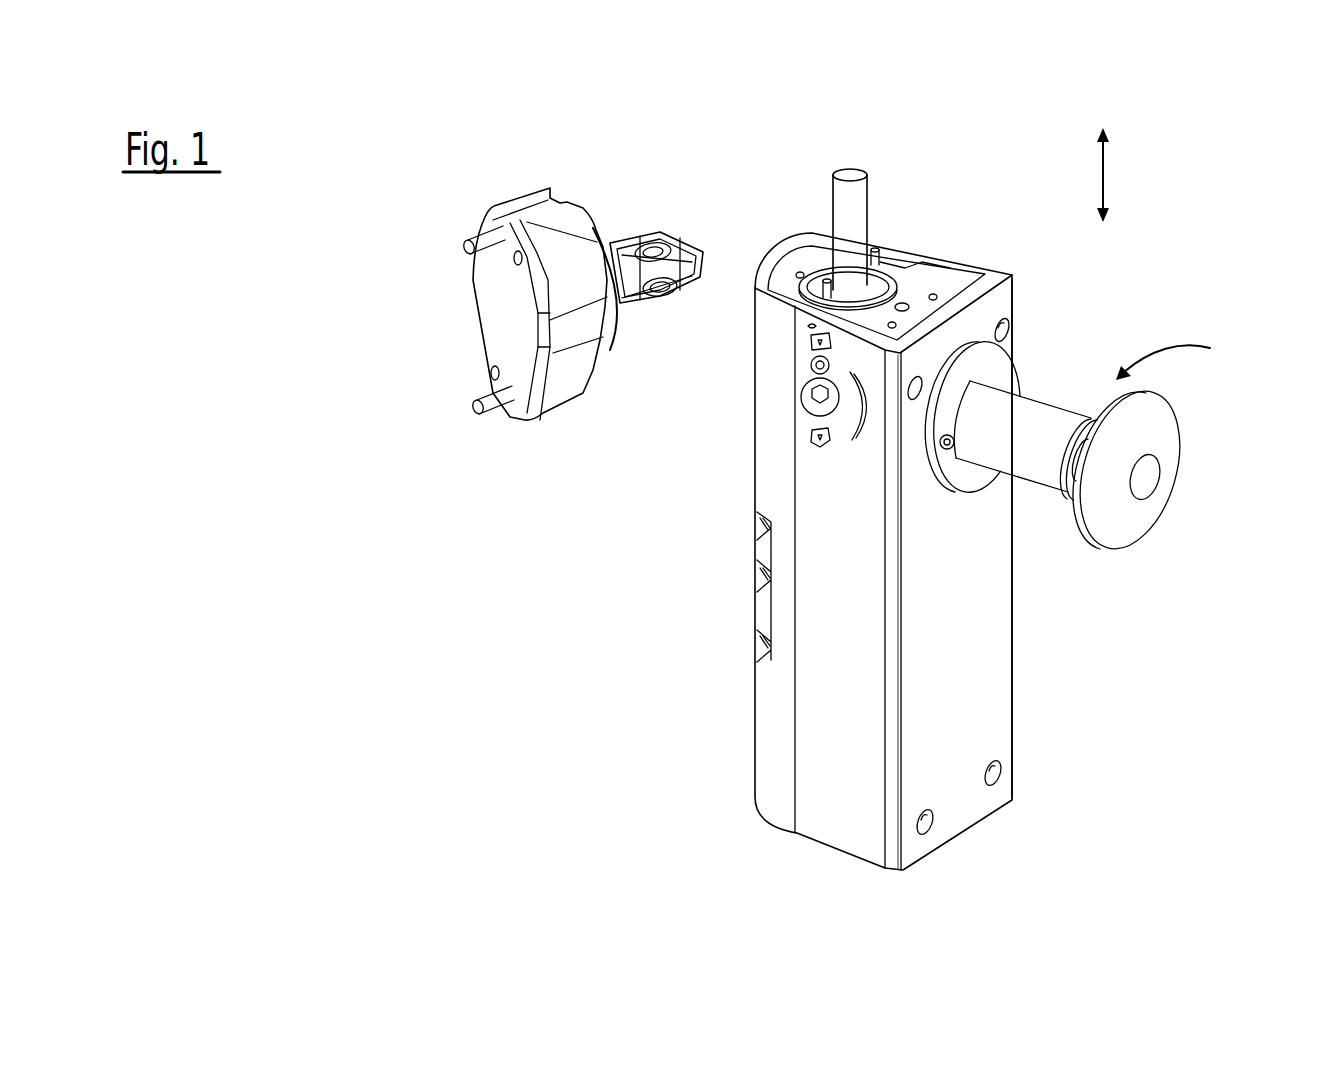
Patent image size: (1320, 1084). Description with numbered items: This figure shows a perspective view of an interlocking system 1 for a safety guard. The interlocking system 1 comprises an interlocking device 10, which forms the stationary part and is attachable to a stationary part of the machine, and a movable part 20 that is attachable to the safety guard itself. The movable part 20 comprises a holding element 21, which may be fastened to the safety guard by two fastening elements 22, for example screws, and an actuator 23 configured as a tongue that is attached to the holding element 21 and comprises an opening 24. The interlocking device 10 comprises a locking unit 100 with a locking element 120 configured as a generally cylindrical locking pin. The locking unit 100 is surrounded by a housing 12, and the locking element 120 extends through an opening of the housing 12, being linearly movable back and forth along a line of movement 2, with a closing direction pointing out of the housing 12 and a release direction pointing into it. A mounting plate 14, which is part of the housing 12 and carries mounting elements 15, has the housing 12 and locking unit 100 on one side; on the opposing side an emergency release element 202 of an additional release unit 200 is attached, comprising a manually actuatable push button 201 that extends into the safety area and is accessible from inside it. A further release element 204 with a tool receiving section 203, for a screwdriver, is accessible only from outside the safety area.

The interlocking system 1 is at (803, 495).
The line of movement 2 is at (1113, 175).
The interlocking device 10 is at (966, 507).
The housing 12 is at (876, 551).
The mounting plate 14 is at (1070, 539).
The mounting elements 15 is at (1003, 597).
The movable part 20 is at (545, 303).
The holding element 21 is at (545, 339).
The fastening elements 22 is at (459, 319).
The actuator 23 is at (699, 244).
The opening 24 is at (687, 203).
The locking unit 100 is at (911, 212).
The locking element 120 is at (911, 157).
The additional release unit 200 is at (745, 440).
The push button 201 is at (1171, 469).
The emergency release element 202 is at (1188, 354).
The tool receiving section 203 is at (752, 357).
The further release element 204 is at (741, 465).